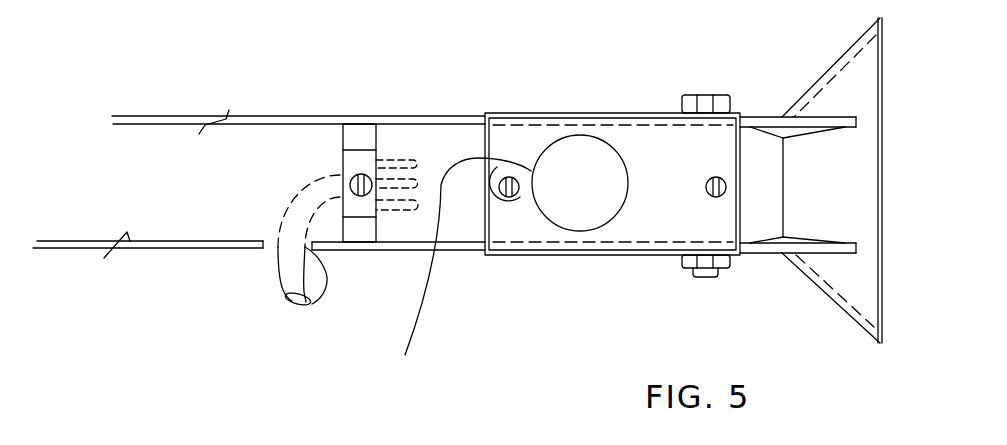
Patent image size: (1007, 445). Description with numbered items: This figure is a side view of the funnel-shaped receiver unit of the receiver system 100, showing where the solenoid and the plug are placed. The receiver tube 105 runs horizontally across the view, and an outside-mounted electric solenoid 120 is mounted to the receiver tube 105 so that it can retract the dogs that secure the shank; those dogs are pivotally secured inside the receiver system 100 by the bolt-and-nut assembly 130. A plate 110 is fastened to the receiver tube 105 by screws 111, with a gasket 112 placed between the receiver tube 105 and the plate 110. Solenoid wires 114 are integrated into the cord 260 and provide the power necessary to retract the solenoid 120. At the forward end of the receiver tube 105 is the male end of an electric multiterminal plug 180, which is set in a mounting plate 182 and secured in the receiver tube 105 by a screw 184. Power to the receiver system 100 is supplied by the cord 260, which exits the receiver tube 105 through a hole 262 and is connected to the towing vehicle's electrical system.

The receiver system 100 is at (830, 97).
The receiver tube 105 is at (150, 155).
The plate 110 is at (660, 143).
The screws 111 is at (508, 197).
The gasket 112 is at (578, 253).
The solenoid wires 114 is at (465, 157).
The electric solenoid 120 is at (568, 157).
The bolt-and-nut assembly 130 is at (698, 107).
The electric multiterminal plug 180 is at (363, 160).
The mounting plate 182 is at (367, 228).
The screw 184 is at (352, 176).
The cord 260 is at (288, 252).
The hole 262 is at (312, 306).